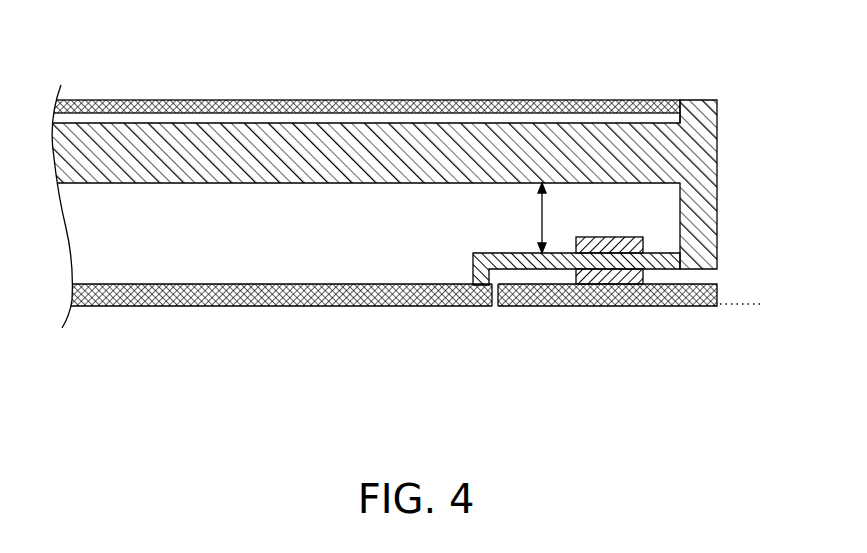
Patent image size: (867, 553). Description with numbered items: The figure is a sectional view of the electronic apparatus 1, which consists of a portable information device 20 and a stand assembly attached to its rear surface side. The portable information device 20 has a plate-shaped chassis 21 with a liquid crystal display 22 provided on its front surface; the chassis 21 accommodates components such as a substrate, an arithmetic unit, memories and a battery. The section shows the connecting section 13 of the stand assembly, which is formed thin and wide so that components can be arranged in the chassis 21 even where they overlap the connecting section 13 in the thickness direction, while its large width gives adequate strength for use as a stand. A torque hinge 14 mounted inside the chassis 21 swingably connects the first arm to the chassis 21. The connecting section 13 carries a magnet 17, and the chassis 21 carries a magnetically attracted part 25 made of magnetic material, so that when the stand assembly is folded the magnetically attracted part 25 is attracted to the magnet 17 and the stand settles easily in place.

The electronic apparatus 1 is at (409, 195).
The connecting section 13 is at (688, 306).
The hinge 14 is at (494, 272).
The magnet 17 is at (648, 284).
The portable information device 20 is at (409, 303).
The chassis 21 is at (718, 140).
The liquid crystal display 22 is at (520, 100).
The magnetically attracted part 25 is at (632, 237).